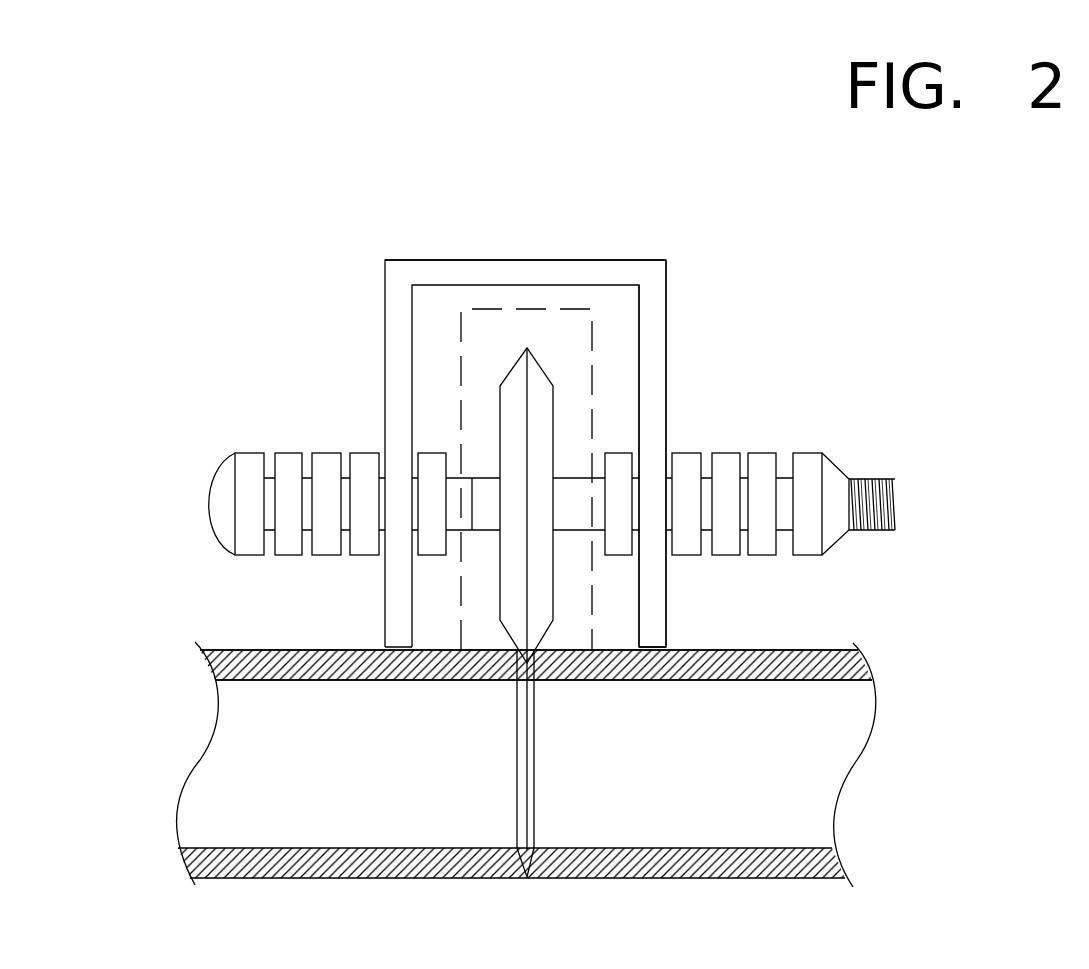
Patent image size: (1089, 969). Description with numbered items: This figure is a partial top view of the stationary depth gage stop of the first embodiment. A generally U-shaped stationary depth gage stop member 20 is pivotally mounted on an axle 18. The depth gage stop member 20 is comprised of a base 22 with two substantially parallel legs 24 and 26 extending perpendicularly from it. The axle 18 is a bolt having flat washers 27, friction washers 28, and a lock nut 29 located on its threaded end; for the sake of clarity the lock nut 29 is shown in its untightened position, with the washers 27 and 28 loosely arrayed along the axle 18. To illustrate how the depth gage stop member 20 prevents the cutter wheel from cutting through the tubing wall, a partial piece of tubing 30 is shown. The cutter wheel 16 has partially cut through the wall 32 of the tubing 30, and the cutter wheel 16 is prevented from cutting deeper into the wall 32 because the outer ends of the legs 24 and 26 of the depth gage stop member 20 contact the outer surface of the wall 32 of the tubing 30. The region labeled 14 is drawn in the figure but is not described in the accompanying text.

The cutter housing 14 is at (597, 413).
The cutter wheel 16 is at (497, 415).
The axle 18 is at (893, 478).
The stationary depth gage stop member 20 is at (530, 258).
The base 22 is at (600, 275).
The leg 24 is at (390, 318).
The leg 26 is at (665, 325).
The flat washers 27 is at (353, 451).
The friction washers 28 is at (318, 557).
The lock nut 29 is at (845, 543).
The tubing 30 is at (833, 827).
The wall 32 is at (845, 663).